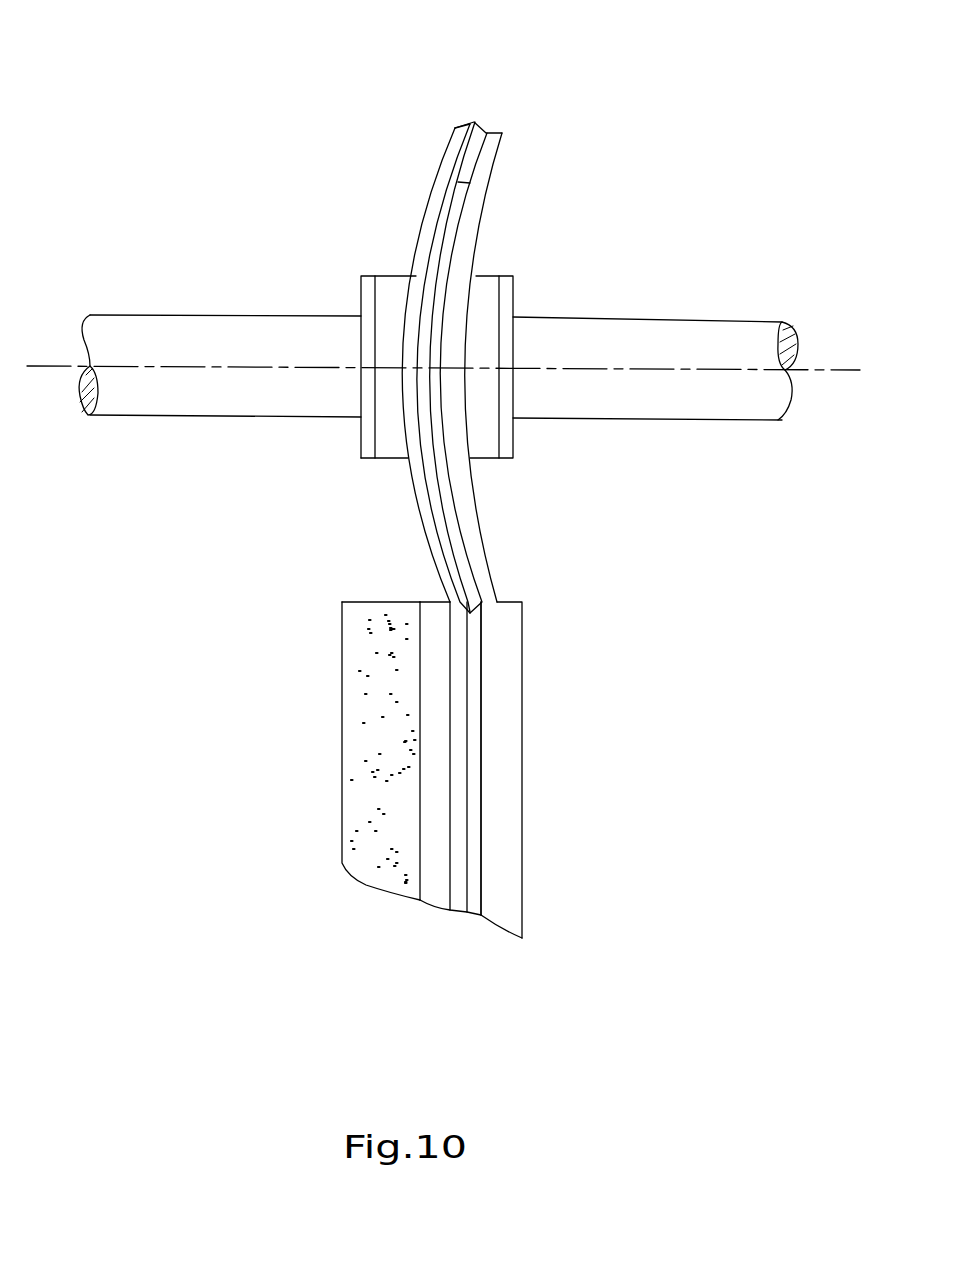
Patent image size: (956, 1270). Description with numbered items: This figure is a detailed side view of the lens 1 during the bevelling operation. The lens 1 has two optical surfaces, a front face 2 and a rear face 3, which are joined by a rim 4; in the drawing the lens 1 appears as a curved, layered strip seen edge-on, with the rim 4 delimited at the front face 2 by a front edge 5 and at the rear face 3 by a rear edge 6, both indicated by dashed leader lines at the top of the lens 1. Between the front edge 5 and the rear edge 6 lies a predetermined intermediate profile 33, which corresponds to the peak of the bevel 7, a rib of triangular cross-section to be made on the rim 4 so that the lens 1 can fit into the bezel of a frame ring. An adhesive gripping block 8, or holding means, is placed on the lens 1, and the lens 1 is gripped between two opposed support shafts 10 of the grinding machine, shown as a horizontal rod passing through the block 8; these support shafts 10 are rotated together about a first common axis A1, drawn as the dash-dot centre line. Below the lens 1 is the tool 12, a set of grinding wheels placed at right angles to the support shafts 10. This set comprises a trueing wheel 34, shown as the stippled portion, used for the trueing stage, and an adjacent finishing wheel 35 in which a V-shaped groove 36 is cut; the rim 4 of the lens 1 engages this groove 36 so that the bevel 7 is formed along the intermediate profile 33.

The lens 1 is at (446, 318).
The front face 2 is at (423, 520).
The rear face 3 is at (482, 528).
The rim 4 is at (483, 122).
The front edge 5 is at (462, 120).
The rear edge 6 is at (500, 125).
The bevel 7 is at (443, 217).
The adhesive gripping block 8 is at (390, 279).
The support shafts 10 is at (165, 326).
The tool 12 is at (406, 770).
The intermediate profile 33 is at (473, 122).
The trueing wheel 34 is at (348, 812).
The finishing wheel 35 is at (513, 697).
The groove 36 is at (478, 813).
The first common axis A1 is at (848, 375).